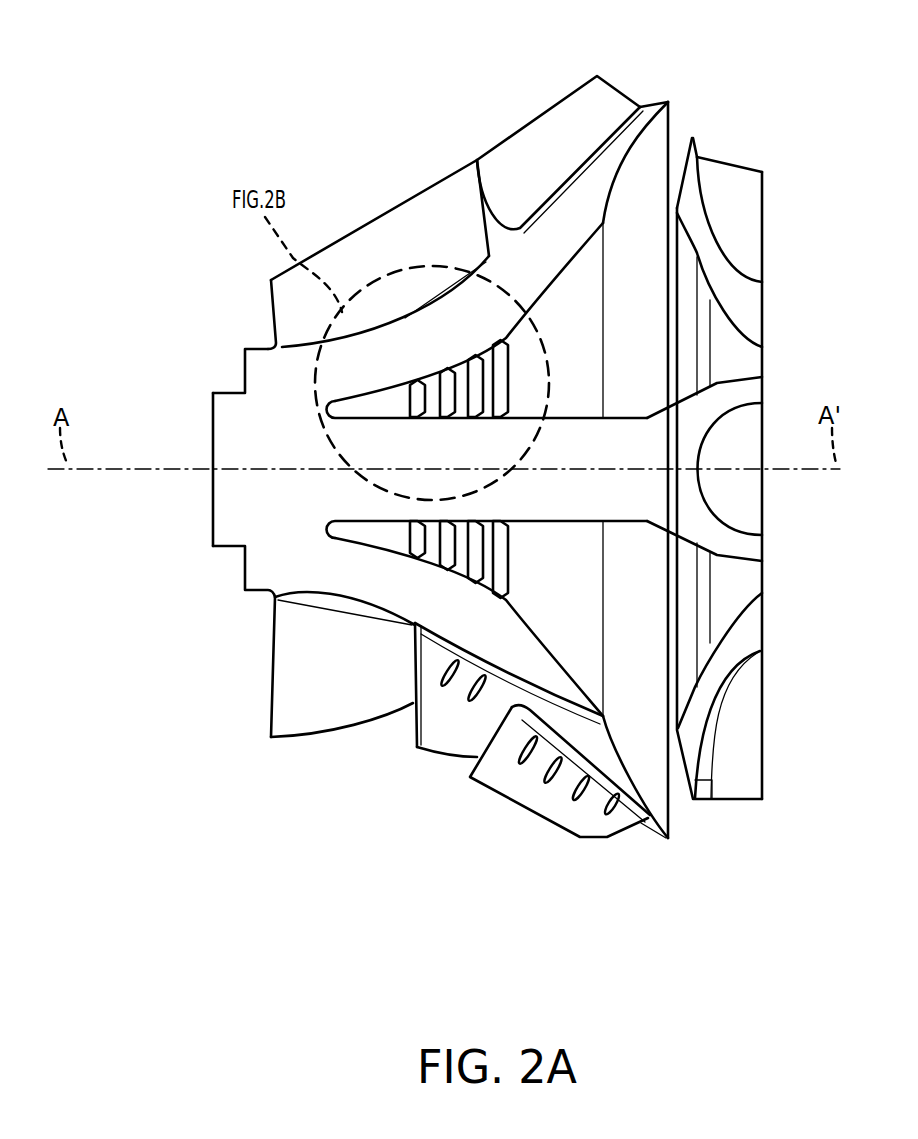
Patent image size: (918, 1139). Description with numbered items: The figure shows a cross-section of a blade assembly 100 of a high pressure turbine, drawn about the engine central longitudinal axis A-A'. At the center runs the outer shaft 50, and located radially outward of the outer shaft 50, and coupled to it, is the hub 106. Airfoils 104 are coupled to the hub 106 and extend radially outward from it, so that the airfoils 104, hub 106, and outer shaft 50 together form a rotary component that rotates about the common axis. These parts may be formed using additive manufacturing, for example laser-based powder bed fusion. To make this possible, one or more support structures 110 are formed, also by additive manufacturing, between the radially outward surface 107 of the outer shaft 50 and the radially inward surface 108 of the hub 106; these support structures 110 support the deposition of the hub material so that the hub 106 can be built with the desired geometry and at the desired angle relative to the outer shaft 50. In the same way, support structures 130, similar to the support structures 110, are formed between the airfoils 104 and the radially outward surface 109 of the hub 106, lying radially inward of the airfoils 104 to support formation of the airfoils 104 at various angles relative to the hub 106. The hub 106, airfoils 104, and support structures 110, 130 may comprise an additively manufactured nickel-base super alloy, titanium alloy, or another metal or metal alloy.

The outer shaft 50 is at (585, 502).
The blade assembly 100 is at (271, 119).
The airfoils 104 is at (388, 230).
The hub 106 is at (568, 228).
The radially outward surface 107 is at (568, 418).
The radially inward surface 108 is at (567, 264).
The radially outward surface 109 is at (412, 624).
The support structures 110 is at (420, 403).
The support structures 130 is at (522, 752).